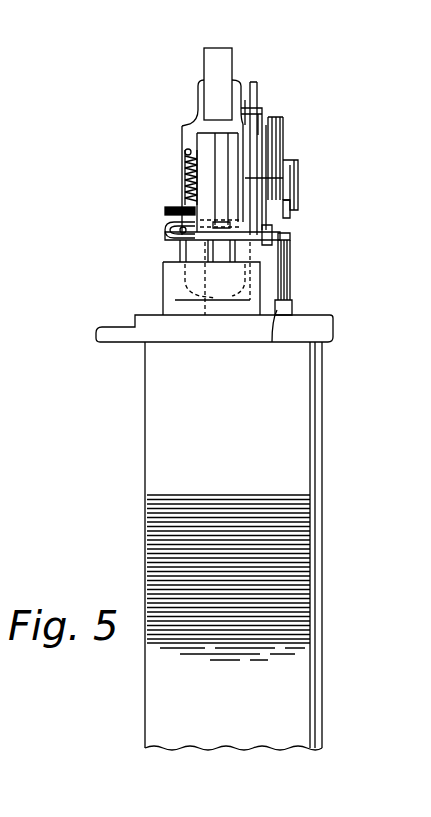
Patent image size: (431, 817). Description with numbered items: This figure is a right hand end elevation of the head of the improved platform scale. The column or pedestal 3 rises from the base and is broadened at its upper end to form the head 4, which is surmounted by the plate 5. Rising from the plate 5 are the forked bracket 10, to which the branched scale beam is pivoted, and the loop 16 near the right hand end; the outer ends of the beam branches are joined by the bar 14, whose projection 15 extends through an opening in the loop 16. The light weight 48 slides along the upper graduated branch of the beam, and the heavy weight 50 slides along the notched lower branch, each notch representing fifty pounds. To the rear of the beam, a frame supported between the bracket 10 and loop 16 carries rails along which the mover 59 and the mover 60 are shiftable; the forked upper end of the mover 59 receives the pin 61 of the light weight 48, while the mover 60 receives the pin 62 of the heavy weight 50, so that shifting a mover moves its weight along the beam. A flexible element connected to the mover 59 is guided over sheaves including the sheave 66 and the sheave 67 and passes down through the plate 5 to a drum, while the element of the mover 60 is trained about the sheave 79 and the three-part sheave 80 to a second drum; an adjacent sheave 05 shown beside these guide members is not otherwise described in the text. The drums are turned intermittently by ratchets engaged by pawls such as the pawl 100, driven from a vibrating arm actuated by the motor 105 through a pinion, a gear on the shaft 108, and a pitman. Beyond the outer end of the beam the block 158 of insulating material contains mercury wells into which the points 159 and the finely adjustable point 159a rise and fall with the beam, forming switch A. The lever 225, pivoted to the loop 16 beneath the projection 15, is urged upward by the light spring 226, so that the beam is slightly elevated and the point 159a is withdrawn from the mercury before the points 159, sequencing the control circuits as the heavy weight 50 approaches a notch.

The column or pedestal 3 is at (228, 597).
The head 4 is at (233, 546).
The plate 5 is at (100, 330).
The forked bracket 10 is at (183, 182).
The bar 14 is at (221, 160).
The projection 15 is at (195, 202).
The loop 16 is at (217, 97).
The light weight 48 is at (239, 108).
The mover 59 is at (258, 95).
The pin 61 is at (263, 111).
The sheave 67 is at (283, 121).
The plate 05 is at (283, 136).
The sheave 66 is at (298, 173).
The heavy weight 50 is at (298, 180).
The mover 60 is at (290, 208).
The pin 62 is at (272, 230).
The sheave 79 is at (290, 238).
The three-part sheave 80 is at (290, 256).
The pawl 100 is at (190, 240).
The motor 105 is at (292, 310).
The shaft 108 is at (272, 342).
The block of insulating material 158 is at (166, 276).
The points 159 is at (240, 254).
The adjustable point 159a is at (180, 250).
The lever 225 is at (212, 318).
The light spring 226 is at (186, 160).